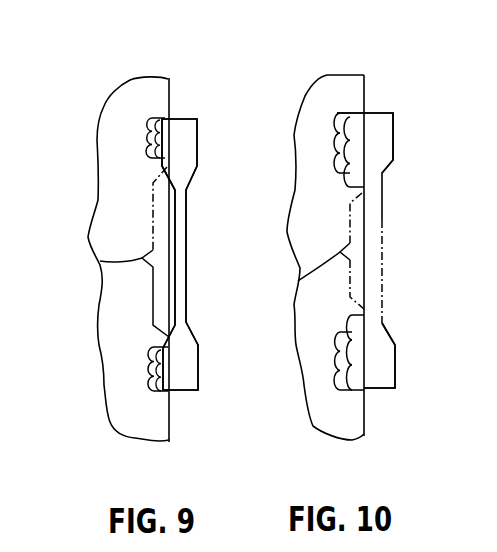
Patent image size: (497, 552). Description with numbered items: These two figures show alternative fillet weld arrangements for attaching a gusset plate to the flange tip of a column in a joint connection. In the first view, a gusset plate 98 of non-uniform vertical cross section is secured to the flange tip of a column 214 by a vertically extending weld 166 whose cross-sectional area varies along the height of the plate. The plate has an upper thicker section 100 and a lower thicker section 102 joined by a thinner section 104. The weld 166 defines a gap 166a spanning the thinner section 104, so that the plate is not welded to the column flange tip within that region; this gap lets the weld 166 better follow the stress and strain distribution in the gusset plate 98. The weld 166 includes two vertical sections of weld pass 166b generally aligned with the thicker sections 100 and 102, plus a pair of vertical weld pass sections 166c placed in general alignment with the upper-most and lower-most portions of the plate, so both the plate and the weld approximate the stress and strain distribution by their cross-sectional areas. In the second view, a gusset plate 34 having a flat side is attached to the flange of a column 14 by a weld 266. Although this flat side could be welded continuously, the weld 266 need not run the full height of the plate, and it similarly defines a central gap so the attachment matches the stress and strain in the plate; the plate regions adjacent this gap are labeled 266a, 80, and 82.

In FIG. 9, the weld 166 is at (148, 93).
In FIG. 9, the column 214 is at (170, 82).
In FIG. 9, the gusset plate 98 is at (196, 108).
In FIG. 9, the thicker section 100 is at (193, 165).
In FIG. 9, the thinner section 104 is at (187, 242).
In FIG. 9, the thicker section 102 is at (193, 370).
In FIG. 9, the gap 166a is at (89, 260).
In FIG. 9, the weld pass 166b is at (165, 117).
In FIG. 9, the weld pass 166c is at (148, 133).
In FIG. 10, the weld 266 is at (350, 103).
In FIG. 10, the column 14 is at (357, 432).
In FIG. 10, the gusset plate 34 is at (388, 122).
In FIG. 10, the upper head portion 80 is at (380, 166).
In FIG. 10, the lower head portion 82 is at (380, 369).
In FIG. 10, the central portion of clamp member 266a is at (298, 279).